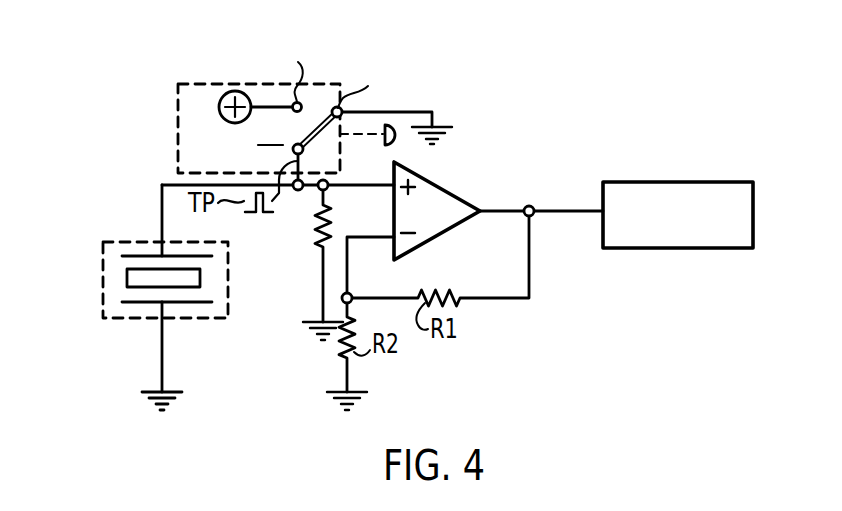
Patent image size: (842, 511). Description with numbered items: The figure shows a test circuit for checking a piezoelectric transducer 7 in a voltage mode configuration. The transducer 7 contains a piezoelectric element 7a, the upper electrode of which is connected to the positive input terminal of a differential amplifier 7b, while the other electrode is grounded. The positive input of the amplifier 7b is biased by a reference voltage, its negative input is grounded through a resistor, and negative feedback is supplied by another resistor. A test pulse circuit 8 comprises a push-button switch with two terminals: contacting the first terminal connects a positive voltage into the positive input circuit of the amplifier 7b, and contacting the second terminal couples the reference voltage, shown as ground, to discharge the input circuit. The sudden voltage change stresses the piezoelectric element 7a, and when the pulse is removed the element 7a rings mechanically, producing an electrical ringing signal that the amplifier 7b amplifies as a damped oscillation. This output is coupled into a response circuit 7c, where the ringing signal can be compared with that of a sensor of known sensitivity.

The piezoelectric transducer 7 is at (163, 294).
The piezoelectric element 7a is at (201, 278).
The differential amplifier 7b is at (452, 193).
The response circuit 7c is at (672, 182).
The test pulse circuit 8 is at (178, 142).